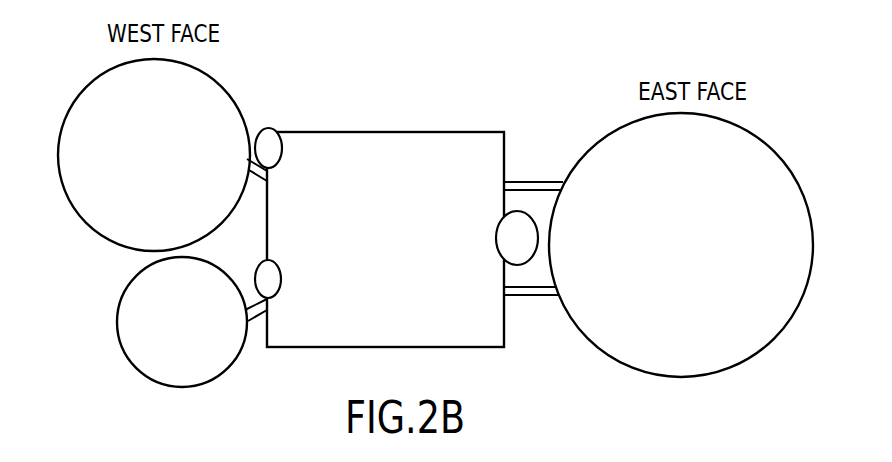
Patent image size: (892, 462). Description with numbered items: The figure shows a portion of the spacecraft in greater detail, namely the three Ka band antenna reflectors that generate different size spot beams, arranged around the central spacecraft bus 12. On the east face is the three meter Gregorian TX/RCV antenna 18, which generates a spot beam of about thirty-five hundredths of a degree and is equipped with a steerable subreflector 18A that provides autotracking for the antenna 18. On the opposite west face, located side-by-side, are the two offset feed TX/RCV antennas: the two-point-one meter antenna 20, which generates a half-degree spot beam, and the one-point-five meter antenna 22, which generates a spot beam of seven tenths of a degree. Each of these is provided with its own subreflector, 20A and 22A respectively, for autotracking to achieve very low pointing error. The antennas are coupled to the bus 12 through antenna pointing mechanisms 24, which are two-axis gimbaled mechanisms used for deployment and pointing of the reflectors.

The bus 12 is at (308, 350).
The 3 meter Gregorian antenna 18 is at (743, 360).
The steerable subreflector 18A is at (522, 262).
The 2.1 meter offset feed TX/RCV antenna 20 is at (215, 76).
The subreflector 20A is at (290, 122).
The 1.5 meter offset feed TX/RCV antenna 22 is at (127, 292).
The subreflector 22A is at (257, 272).
The antenna pointing mechanisms 24 is at (255, 177).